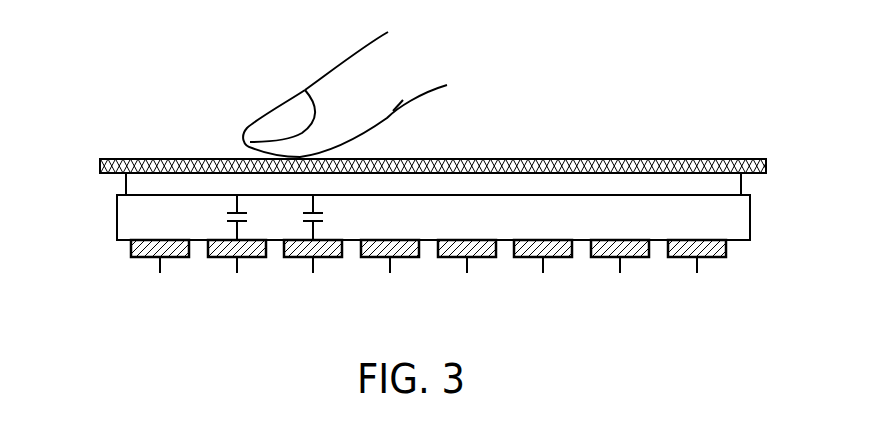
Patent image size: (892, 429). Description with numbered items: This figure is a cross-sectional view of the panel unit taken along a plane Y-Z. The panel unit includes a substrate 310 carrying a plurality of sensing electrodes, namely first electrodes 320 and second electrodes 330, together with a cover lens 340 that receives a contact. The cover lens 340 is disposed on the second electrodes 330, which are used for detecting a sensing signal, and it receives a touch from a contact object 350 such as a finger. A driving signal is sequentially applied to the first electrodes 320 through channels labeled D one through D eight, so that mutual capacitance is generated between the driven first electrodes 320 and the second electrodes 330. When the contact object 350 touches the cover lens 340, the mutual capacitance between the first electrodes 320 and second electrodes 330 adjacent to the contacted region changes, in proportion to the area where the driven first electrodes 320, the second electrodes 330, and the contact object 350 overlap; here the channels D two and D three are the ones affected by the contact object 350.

The substrate 310 is at (124, 218).
The first electrodes 320 is at (131, 257).
The second electrodes 330 is at (133, 183).
The cover lens 340 is at (557, 158).
The contact object 350 is at (353, 78).